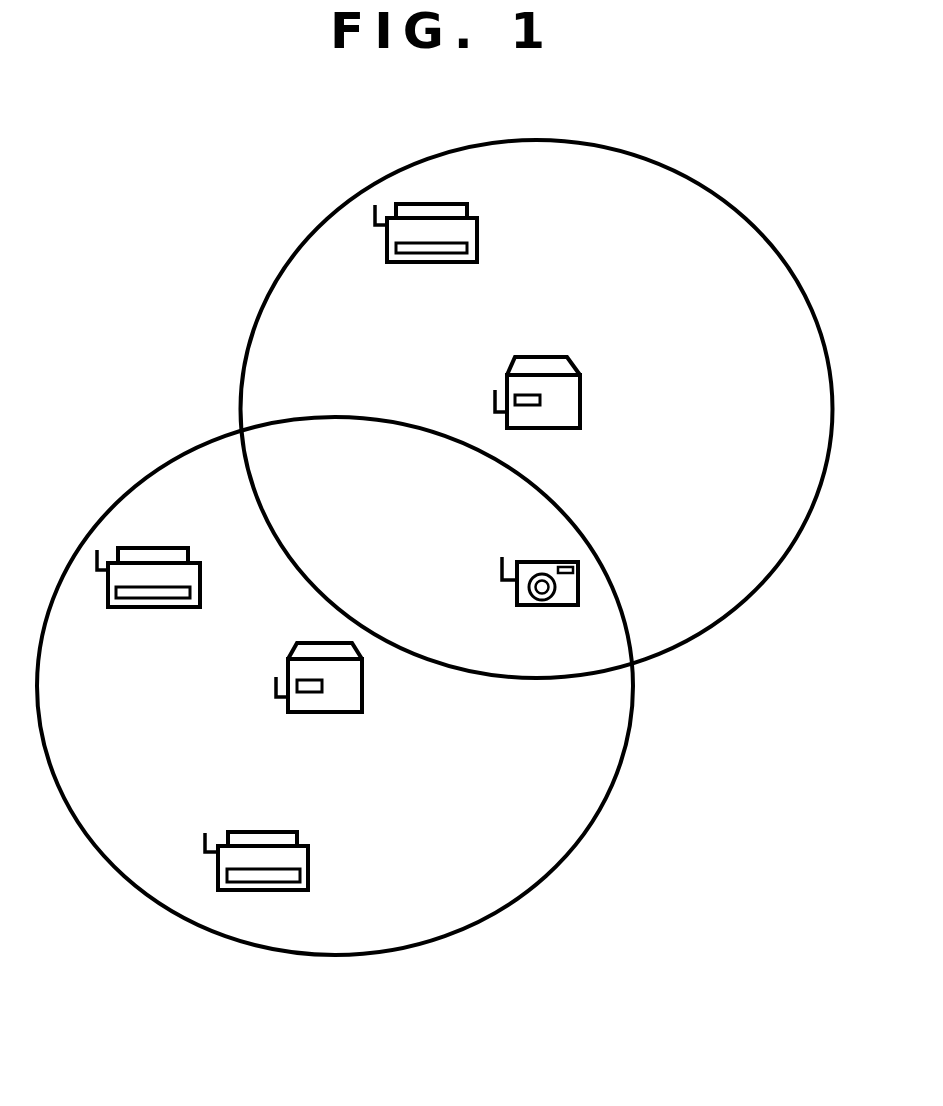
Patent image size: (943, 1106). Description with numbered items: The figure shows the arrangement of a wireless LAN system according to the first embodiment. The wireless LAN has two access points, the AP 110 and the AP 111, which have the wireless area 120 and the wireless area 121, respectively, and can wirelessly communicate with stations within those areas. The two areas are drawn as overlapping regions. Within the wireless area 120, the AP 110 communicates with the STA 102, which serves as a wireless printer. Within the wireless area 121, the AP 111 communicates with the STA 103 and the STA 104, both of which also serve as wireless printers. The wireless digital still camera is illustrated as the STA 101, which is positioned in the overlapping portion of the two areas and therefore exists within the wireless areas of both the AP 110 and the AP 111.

The STA 101 is at (517, 595).
The STA 102 is at (478, 237).
The STA 103 is at (200, 580).
The STA 104 is at (308, 862).
The AP 110 is at (580, 400).
The AP 111 is at (362, 692).
The wireless area 120 is at (605, 145).
The wireless area 121 is at (157, 465).